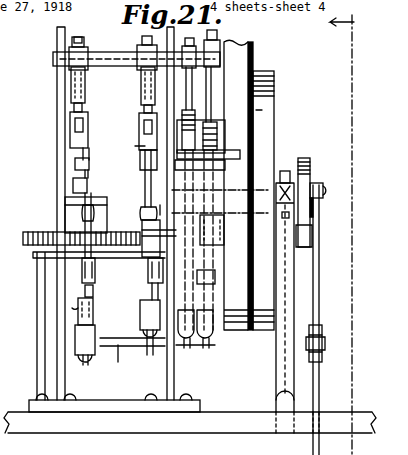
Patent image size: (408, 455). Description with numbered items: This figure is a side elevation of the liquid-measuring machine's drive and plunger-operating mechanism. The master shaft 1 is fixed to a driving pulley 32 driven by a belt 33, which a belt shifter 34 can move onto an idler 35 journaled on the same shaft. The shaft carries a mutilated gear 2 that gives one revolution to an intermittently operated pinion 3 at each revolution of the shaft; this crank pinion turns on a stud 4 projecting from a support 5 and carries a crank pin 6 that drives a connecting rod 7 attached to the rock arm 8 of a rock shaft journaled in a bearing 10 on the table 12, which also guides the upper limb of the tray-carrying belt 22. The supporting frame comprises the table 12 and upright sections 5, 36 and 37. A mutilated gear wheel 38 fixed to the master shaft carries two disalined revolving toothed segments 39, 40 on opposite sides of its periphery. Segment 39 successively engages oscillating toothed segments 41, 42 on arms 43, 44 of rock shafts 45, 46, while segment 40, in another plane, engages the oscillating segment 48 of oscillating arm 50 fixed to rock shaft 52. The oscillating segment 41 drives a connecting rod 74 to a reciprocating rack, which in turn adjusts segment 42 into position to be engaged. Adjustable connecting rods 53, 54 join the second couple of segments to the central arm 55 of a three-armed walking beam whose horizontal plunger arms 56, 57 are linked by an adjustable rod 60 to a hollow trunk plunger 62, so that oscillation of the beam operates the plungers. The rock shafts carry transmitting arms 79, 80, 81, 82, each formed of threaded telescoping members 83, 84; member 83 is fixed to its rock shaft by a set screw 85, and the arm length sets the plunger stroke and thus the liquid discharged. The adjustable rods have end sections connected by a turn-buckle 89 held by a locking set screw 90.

The master shaft 1 is at (162, 202).
The mutilated gear 2 is at (305, 152).
The intermittently operated pinion 3 is at (311, 160).
The stud 4 is at (311, 185).
The support 5 is at (258, 388).
The crank pin 6 is at (329, 190).
The connecting rod 7 is at (319, 290).
The rock arm 8 is at (334, 448).
The bearing 10 is at (36, 428).
The table 12 is at (365, 235).
The belt 22 is at (359, 26).
The driving pulley 32 is at (255, 54).
The belt 33 is at (252, 42).
The belt shifter 34 is at (213, 150).
The idler 35 is at (275, 78).
The frame section 36 is at (165, 385).
The frame section 37 is at (57, 120).
The mutilated gear wheel 38 is at (206, 238).
The revolving toothed segment 39 is at (215, 165).
The revolving toothed segment 40 is at (148, 246).
The oscillating toothed segment 41 is at (214, 125).
The oscillating toothed segment 42 is at (215, 278).
The arm 43 is at (194, 100).
The arm 44 is at (187, 97).
The rock shaft 45 is at (105, 57).
The rock shaft 46 is at (214, 348).
The oscillating toothed segment 48 is at (172, 292).
The oscillating arm 50 is at (143, 310).
The rock shaft 52 is at (118, 348).
The adjustable connecting rod 53 is at (76, 163).
The adjustable connecting rod 54 is at (86, 146).
The central arm 55 is at (88, 118).
The plunger arm 56 is at (68, 185).
The plunger arm 57 is at (19, 241).
The adjustable rod 60 is at (65, 215).
The hollow trunk plunger 62 is at (70, 215).
The connecting rod 74 is at (140, 146).
The transmitting arm 79 is at (133, 81).
The transmitting arm 80 is at (144, 338).
The transmitting arm 81 is at (91, 76).
The transmitting arm 82 is at (93, 292).
The threaded telescoping member 83 is at (70, 88).
The threaded telescoping member 84 is at (72, 125).
The set screw 85 is at (79, 37).
The turn-buckle 89 is at (146, 171).
The locking set screw 90 is at (96, 216).